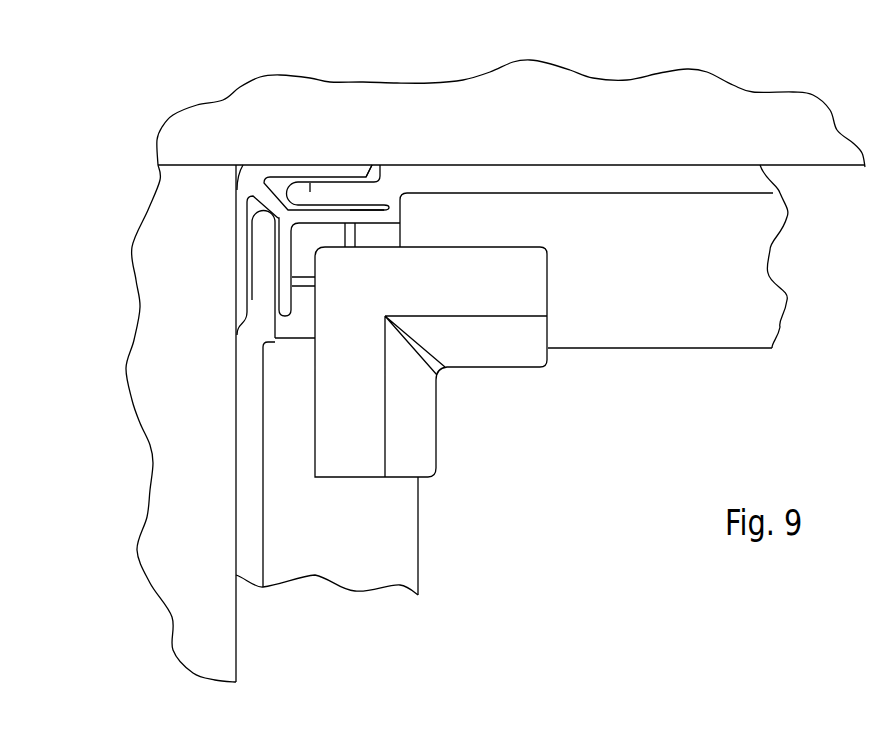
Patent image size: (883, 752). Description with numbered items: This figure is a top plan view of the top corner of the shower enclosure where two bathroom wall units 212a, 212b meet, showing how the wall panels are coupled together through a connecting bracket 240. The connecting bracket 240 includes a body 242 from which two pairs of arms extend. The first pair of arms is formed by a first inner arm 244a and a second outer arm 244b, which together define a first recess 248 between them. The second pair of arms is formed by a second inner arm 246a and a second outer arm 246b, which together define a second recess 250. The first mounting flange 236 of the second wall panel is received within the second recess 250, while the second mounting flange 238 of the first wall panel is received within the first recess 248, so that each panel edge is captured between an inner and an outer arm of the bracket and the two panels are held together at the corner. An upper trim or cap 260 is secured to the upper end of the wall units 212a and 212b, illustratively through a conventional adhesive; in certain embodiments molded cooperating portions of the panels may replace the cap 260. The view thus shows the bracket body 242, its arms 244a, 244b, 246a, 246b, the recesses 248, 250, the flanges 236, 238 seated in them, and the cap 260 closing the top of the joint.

The bathroom wall unit 212a is at (253, 515).
The bathroom wall unit 212b is at (605, 167).
The first mounting flange 236 is at (310, 192).
The second mounting flange 238 is at (258, 233).
The connecting bracket 240 is at (227, 153).
The body 242 is at (258, 167).
The first inner arm 244a is at (283, 301).
The second outer arm 244b is at (245, 306).
The second inner arm 246a is at (385, 212).
The second outer arm 246b is at (365, 168).
The first recess 248 is at (236, 259).
The second recess 250 is at (346, 162).
The upper trim or cap 260 is at (500, 355).